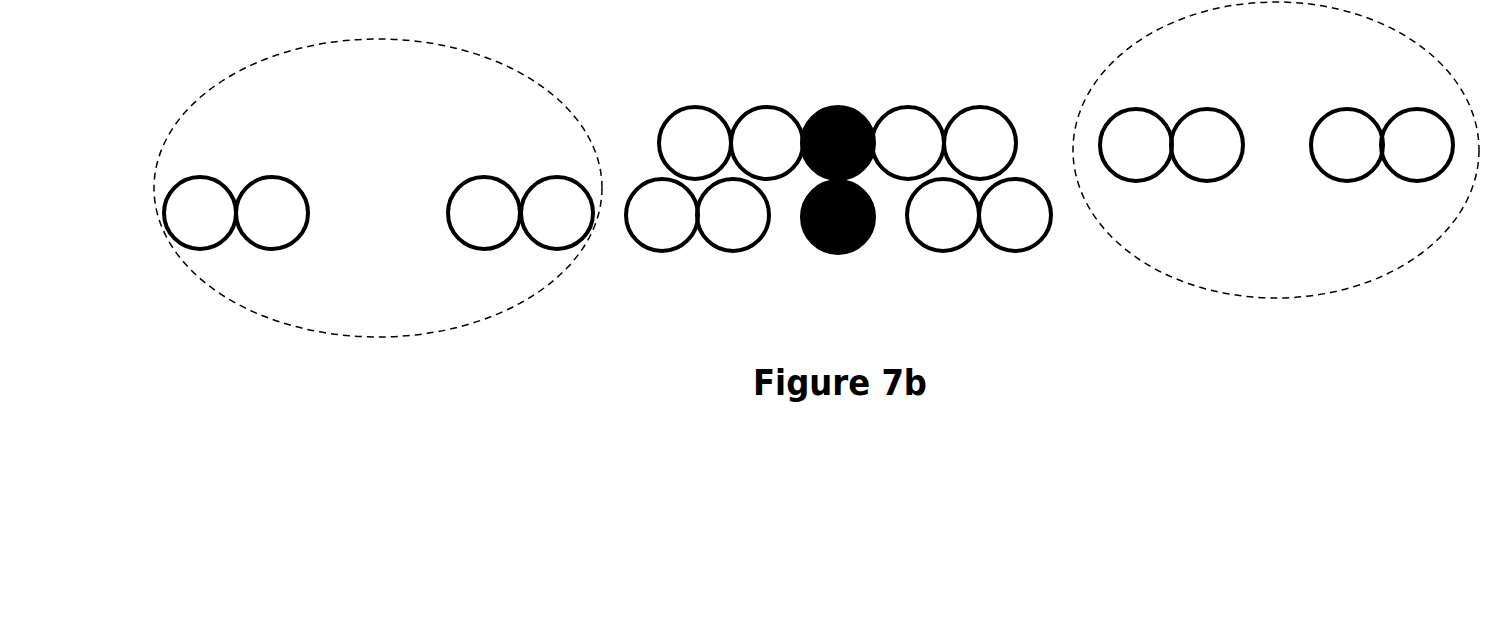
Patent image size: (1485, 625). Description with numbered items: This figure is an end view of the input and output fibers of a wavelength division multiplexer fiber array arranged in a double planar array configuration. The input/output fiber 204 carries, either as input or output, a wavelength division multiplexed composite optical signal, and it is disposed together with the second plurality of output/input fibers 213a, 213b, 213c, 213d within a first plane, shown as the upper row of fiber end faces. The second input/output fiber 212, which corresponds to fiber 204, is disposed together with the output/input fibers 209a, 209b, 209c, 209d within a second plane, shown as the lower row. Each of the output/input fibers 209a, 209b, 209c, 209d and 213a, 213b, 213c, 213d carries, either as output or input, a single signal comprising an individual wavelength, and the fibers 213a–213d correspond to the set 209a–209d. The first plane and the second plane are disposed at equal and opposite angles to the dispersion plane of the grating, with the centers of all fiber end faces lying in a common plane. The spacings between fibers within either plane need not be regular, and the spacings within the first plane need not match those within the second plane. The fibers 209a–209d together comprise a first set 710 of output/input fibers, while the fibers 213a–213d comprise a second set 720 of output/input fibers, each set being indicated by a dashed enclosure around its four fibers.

The input/output fiber 204 is at (850, 108).
The second input/output fiber 212 is at (848, 252).
The output/input fiber 209a is at (207, 176).
The output/input fiber 209b is at (275, 177).
The output/input fiber 209c is at (477, 177).
The output/input fiber 209d is at (553, 176).
The second output/input fiber 213a is at (683, 110).
The second output/input fiber 213b is at (755, 110).
The second output/input fiber 213c is at (927, 110).
The second output/input fiber 213d is at (993, 108).
The first set of output/input fibers 710 is at (448, 328).
The second set of output/input fibers 720 is at (1328, 295).